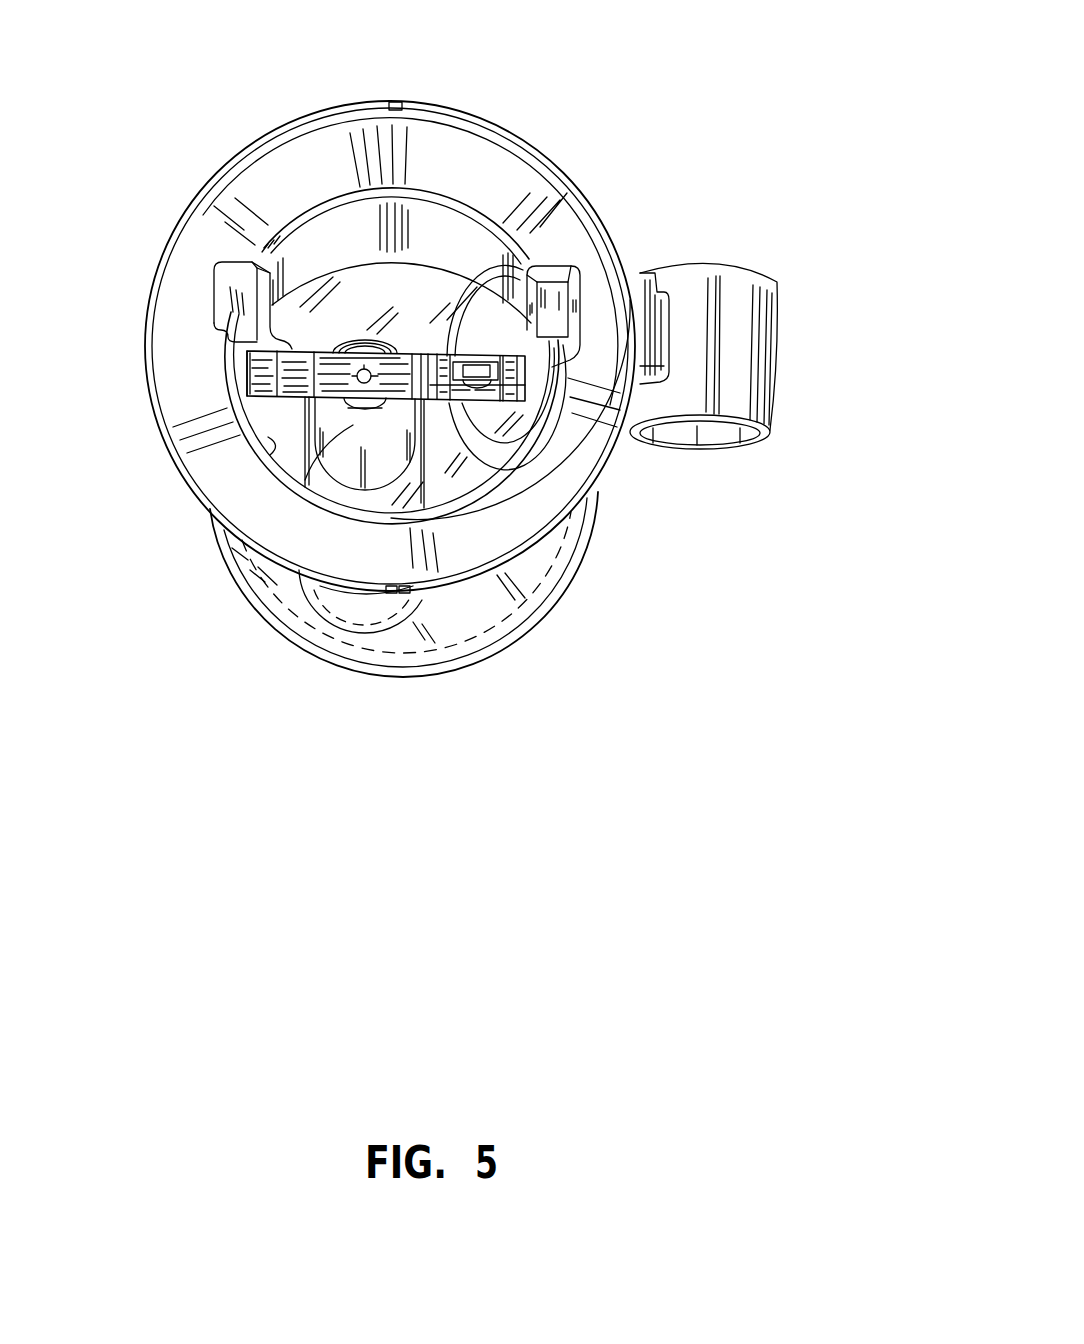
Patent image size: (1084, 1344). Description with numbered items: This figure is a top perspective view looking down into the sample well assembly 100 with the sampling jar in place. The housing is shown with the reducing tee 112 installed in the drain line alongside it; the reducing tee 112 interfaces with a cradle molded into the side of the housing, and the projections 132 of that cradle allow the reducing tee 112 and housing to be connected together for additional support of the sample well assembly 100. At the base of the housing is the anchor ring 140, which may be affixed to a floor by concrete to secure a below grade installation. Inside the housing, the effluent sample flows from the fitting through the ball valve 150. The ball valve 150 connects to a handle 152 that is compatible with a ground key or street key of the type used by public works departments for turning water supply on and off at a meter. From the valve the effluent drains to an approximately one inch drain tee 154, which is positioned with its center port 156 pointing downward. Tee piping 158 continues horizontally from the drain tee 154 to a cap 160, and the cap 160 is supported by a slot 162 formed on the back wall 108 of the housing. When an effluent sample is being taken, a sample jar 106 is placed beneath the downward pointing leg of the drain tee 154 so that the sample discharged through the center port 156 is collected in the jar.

The sample well assembly 100 is at (641, 53).
The sample jar 106 is at (306, 480).
The back wall 108 is at (307, 443).
The reducing tee 112 is at (747, 365).
The projections 132 is at (657, 310).
The anchor ring 140 is at (537, 578).
The ball valve 150 is at (612, 230).
The handle 152 is at (498, 370).
The drain tee 154 is at (364, 366).
The center port 156 is at (384, 341).
The tee piping 158 is at (308, 268).
The cap 160 is at (214, 336).
The slot 162 is at (247, 394).